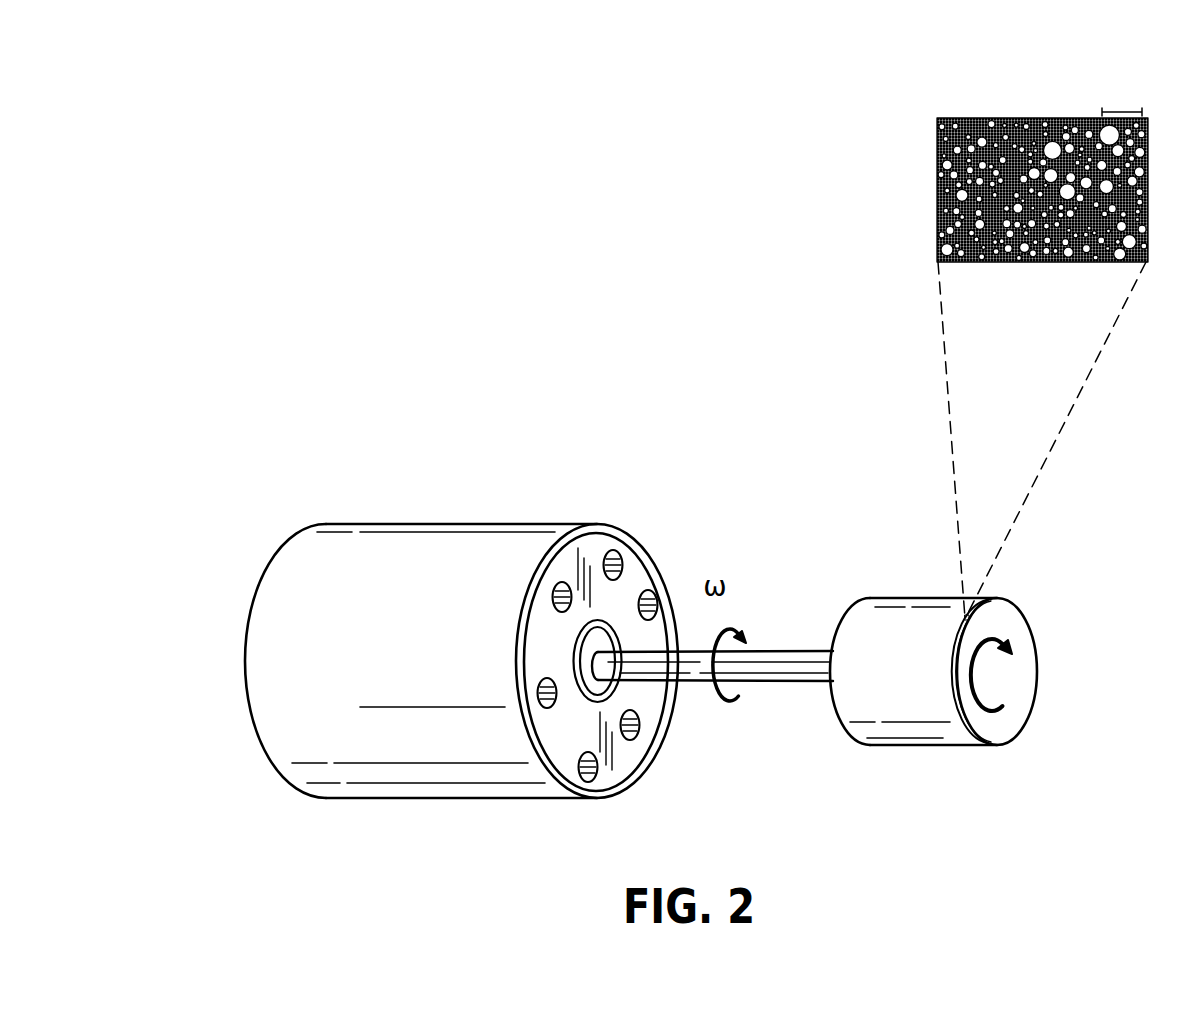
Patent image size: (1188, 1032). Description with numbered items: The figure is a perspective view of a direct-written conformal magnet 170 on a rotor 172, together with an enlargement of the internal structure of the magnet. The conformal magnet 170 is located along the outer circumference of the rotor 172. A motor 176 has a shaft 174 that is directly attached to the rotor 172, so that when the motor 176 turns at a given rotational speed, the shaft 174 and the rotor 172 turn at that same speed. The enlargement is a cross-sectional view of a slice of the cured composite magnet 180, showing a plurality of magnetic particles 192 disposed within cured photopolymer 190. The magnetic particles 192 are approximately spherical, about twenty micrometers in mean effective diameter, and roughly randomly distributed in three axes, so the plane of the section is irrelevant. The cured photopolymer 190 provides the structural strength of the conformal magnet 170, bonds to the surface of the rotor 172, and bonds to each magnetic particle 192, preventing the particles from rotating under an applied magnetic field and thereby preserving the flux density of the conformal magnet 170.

The conformal magnet 170 is at (950, 690).
The rotor 172 is at (906, 598).
The shaft 174 is at (782, 650).
The motor 176 is at (452, 522).
The composite magnet 180 is at (987, 320).
The cured photopolymer 190 is at (1045, 127).
The magnetic particles 192 is at (1087, 133).